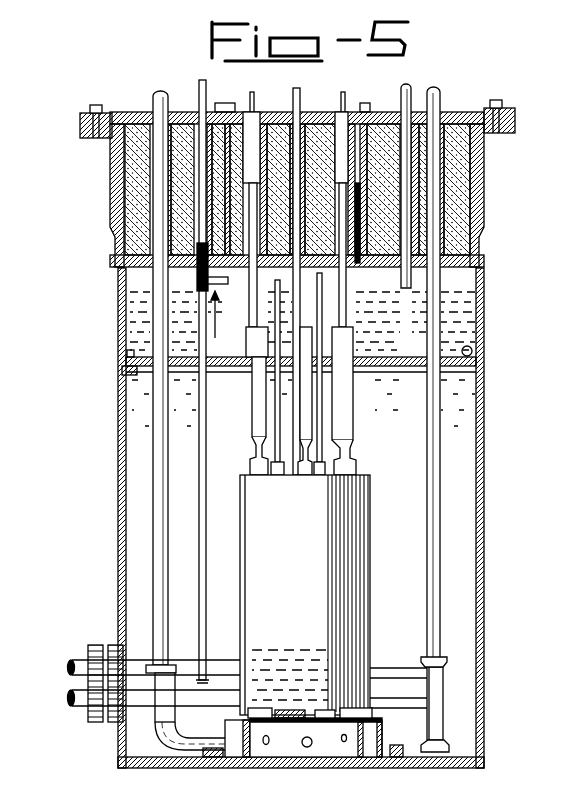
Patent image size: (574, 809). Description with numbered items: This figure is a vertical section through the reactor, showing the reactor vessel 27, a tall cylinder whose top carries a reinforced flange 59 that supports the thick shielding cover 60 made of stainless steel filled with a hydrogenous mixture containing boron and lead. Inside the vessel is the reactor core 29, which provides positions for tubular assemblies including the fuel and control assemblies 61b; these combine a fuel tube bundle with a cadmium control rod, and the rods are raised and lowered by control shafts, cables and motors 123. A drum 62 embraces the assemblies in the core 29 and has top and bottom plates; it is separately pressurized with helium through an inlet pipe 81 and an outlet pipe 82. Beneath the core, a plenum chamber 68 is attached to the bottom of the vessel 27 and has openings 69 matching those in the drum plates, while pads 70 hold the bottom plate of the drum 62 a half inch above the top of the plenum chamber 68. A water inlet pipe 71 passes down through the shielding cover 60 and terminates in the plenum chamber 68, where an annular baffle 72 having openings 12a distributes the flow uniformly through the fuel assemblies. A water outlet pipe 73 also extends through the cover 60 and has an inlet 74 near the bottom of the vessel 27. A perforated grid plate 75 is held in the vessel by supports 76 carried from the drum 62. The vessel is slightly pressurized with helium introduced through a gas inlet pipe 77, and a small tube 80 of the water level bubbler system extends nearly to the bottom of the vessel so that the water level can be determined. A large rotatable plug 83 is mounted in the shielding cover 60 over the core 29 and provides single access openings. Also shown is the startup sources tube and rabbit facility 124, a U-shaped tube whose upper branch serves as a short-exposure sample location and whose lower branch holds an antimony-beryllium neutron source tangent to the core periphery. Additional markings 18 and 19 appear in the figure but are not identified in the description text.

The inlet opening 12a is at (305, 741).
The bracket 18 is at (228, 284).
The flow direction arrow 19 is at (226, 321).
The reactor vessel 27 is at (118, 442).
The reactor core 29 is at (306, 579).
The reinforced flange 59 is at (82, 128).
The shielding cover 60 is at (122, 166).
The fuel and control assembly 61b is at (253, 416).
The drum 62 is at (350, 572).
The plenum chamber 68 is at (303, 752).
The openings 69 is at (257, 716).
The pads 70 is at (247, 717).
The water inlet pipe 71 is at (163, 585).
The annular baffle 72 is at (245, 758).
The water outlet pipe 73 is at (437, 484).
The inlet 74 is at (444, 755).
The perforated grid plate 75 is at (473, 355).
The supports 76 is at (260, 421).
The gas inlet pipe 77 is at (402, 279).
The small tube 80 is at (206, 515).
The inlet pipe 81 is at (277, 471).
The outlet pipe 82 is at (318, 472).
The rotatable plug 83 is at (320, 189).
The motors 123 is at (337, 103).
The startup sources tube and rabbit facility 124 is at (383, 655).